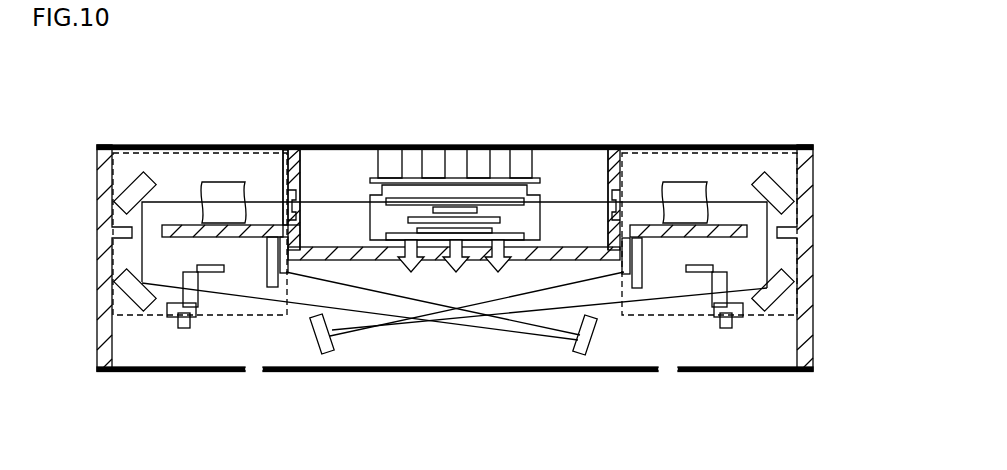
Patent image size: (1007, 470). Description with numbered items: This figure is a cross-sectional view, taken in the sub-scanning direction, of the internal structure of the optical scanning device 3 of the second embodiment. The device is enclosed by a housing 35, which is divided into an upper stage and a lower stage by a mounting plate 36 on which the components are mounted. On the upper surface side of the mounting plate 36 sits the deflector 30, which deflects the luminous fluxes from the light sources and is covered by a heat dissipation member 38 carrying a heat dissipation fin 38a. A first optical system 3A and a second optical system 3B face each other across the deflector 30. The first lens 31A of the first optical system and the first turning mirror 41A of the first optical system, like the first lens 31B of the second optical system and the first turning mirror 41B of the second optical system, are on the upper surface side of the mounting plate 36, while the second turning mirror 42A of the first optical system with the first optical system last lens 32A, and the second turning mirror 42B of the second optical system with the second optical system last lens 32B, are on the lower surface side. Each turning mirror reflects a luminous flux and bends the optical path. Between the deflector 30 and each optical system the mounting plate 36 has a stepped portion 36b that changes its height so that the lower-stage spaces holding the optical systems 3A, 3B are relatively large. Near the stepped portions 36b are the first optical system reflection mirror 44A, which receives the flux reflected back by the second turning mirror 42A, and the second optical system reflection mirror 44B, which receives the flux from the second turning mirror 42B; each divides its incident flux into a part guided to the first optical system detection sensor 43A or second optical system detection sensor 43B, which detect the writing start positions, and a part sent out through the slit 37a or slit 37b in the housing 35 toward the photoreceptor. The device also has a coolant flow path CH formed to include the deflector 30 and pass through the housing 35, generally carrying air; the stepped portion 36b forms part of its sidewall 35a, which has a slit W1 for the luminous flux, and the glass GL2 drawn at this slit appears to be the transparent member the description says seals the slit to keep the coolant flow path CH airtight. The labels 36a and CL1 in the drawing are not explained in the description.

The optical scanning device 3 is at (792, 110).
The first optical system 3A is at (665, 155).
The second optical system 3B is at (157, 143).
The deflector 30 is at (454, 205).
The first lens of the first optical system 31A is at (685, 188).
The first lens of the second optical system 31B is at (223, 188).
The first optical system last lens 32A is at (712, 298).
The second optical system last lens 32B is at (195, 294).
The housing 35 is at (747, 145).
The sidewall 35a is at (290, 195).
The mounting plate 36 is at (722, 225).
The bottom portion of holder 36a is at (530, 262).
The stepped portion 36b is at (300, 247).
The slit 37a is at (253, 372).
The slit 37b is at (668, 372).
The heat dissipation member 38 is at (538, 172).
The heat dissipation fin 38a is at (502, 168).
The first turning mirror of the first optical system 41A is at (778, 192).
The first turning mirror of the second optical system 41B is at (133, 192).
The second turning mirror of the first optical system 42A is at (776, 292).
The second turning mirror of the second optical system 42B is at (133, 293).
The first optical system detection sensor 43A is at (624, 238).
The second optical system detection sensor 43B is at (282, 238).
The first optical system reflection mirror 44A is at (324, 352).
The second optical system reflection mirror 44B is at (583, 352).
The coolant flow path CH is at (555, 190).
The clamp CL1 is at (608, 146).
The glass plate GL2 is at (301, 235).
The slit W1 is at (296, 195).